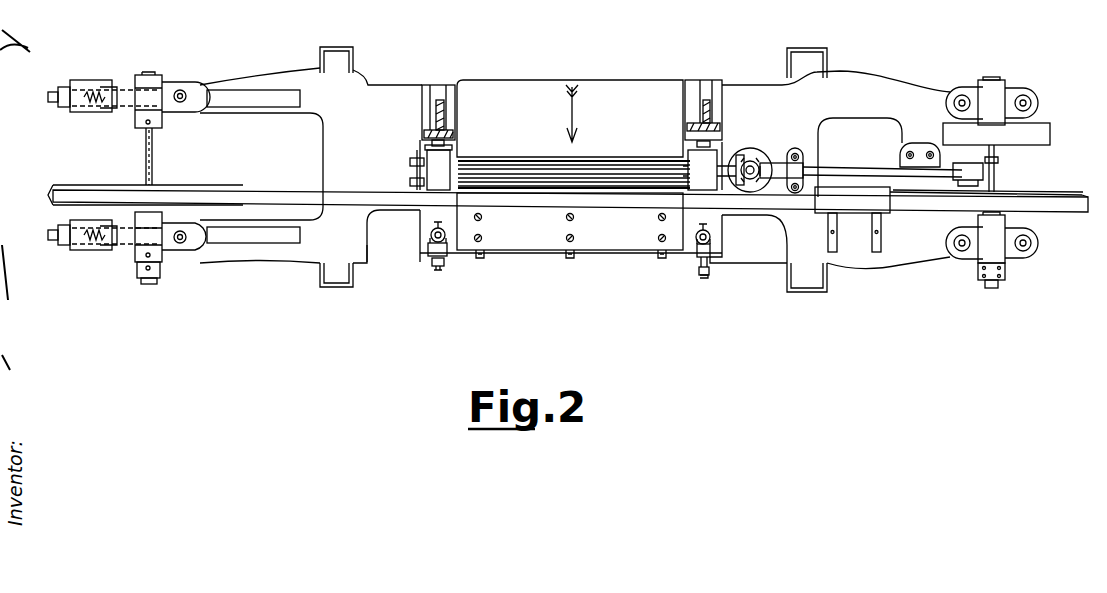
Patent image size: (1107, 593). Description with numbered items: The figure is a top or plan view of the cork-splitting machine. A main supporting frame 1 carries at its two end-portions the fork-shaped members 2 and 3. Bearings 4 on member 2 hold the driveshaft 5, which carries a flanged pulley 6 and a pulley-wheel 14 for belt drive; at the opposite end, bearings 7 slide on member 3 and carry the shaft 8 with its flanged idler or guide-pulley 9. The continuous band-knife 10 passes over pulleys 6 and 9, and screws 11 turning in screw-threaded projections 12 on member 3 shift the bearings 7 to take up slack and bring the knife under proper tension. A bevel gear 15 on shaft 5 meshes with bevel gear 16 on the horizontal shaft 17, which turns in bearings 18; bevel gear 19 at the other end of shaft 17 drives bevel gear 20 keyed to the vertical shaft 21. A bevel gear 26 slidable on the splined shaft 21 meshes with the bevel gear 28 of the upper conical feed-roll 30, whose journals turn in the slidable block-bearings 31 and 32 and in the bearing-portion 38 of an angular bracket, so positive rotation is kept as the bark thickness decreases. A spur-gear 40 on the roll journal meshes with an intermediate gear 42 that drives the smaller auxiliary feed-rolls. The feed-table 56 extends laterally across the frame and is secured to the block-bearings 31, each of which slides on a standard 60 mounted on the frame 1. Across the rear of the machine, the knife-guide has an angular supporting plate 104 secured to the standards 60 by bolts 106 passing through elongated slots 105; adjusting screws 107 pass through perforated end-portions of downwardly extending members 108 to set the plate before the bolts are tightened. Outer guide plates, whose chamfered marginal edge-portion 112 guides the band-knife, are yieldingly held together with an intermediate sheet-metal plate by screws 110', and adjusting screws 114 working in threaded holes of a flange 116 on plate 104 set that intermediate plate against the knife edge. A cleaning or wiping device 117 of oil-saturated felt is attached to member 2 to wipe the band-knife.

The main supporting frame 1 is at (345, 50).
The fork-shaped element or member 2 is at (900, 87).
The fork-shaped element or member 3 is at (372, 88).
The bearings 4 is at (1000, 96).
The driveshaft or spindle 5 is at (1075, 194).
The flanged pulley or wheel 6 is at (1080, 194).
The bearings 7 is at (140, 108).
The shaft or spindle 8 is at (156, 143).
The flanged pulley or wheel 9 is at (50, 206).
The band-knife 10 is at (278, 190).
The screws 11 is at (52, 98).
The screw-threaded projections 12 is at (108, 92).
The pulley-wheel 14 is at (1040, 133).
The bevel gear 15 is at (1003, 164).
The bevel gear 16 is at (998, 188).
The horizontal shaft 17 is at (860, 171).
The bearings 18 is at (797, 171).
The bevel-gear 19 is at (776, 184).
The bevel gear 20 is at (765, 170).
The vertical shaft 21 is at (761, 167).
The bevel-gear 26 is at (753, 163).
The bevel-gear 28 is at (738, 189).
The conical feed-roll 30 is at (522, 172).
The slidable block-bearing 31 is at (712, 162).
The slidable block-bearing 32 is at (437, 160).
The bearing-portion 38 is at (746, 158).
The spur-gear 40 is at (410, 162).
The intermediate gear 42 is at (409, 184).
The feed-table 56 is at (524, 88).
The standard 60 is at (428, 90).
The supporting plate or element 104 is at (419, 224).
The elongated slots 105 is at (447, 245).
The bolts 106 is at (433, 242).
The adjusting screws 107 is at (437, 270).
The downwardly extending members 108 is at (446, 249).
The screws 110' is at (568, 223).
The longitudinal marginal edge-portion 112 is at (528, 205).
The adjusting screws 114 is at (484, 257).
The flange 116 is at (590, 256).
The cleaning or wiping device 117 is at (860, 215).